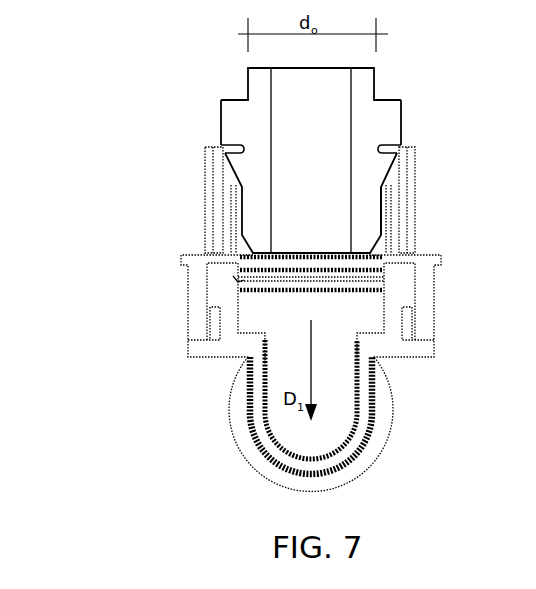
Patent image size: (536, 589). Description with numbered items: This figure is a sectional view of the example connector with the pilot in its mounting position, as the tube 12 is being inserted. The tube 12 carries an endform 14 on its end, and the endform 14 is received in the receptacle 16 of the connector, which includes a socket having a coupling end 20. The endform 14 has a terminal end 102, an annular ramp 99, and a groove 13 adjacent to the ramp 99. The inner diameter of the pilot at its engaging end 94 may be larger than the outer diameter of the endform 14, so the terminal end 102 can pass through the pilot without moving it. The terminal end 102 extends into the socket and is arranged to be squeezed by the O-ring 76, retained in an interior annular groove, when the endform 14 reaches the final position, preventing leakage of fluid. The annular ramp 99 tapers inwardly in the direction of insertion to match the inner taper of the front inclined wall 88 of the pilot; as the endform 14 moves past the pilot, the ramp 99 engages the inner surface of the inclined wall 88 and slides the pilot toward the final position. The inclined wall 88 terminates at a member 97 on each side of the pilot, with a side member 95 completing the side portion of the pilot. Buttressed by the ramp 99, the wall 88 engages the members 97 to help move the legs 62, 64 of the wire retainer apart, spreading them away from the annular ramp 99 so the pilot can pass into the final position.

The tube 12 is at (374, 78).
The groove 13 is at (230, 131).
The endform 14 is at (386, 122).
The receptacle 16 is at (133, 300).
The coupling end 20 is at (392, 408).
The leg 62 is at (385, 208).
The leg 64 is at (222, 205).
The O-ring 76 is at (383, 268).
The front inclined wall 88 is at (392, 185).
The engaging end 94 is at (224, 228).
The side member 95 is at (395, 243).
The member 97 is at (390, 193).
The annular ramp 99 is at (240, 188).
The terminal end 102 is at (224, 250).